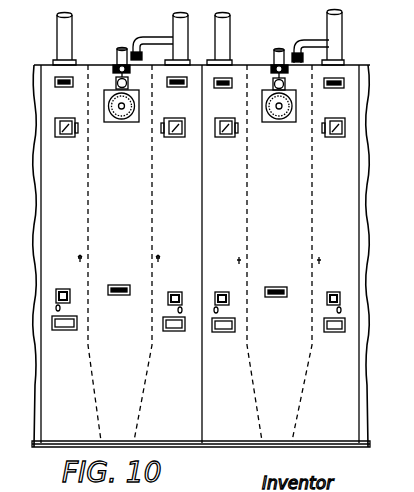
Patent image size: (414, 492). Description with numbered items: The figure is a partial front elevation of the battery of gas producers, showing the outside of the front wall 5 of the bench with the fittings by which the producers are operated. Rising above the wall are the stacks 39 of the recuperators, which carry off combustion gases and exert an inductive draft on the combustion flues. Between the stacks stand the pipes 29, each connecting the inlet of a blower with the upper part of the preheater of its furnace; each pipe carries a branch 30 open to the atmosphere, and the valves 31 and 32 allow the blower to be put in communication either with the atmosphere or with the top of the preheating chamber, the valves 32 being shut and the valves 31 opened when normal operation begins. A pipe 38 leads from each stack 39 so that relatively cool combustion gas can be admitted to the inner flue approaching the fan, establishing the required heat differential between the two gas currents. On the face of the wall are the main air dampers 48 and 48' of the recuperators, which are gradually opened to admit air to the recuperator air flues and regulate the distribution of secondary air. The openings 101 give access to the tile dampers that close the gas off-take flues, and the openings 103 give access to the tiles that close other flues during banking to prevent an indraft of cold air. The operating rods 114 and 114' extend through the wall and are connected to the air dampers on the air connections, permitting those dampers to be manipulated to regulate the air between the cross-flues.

The front wall 5 is at (50, 306).
The pipe 29 is at (115, 83).
The branch 30 is at (118, 56).
The valve 31 is at (115, 85).
The valve 32 is at (130, 70).
The pipe 38 is at (153, 40).
The stack 39 is at (66, 50).
The air damper 48 is at (142, 140).
The air damper 48' is at (253, 140).
The opening 101 is at (125, 280).
The opening 103 is at (60, 320).
The operating rod 114 is at (178, 307).
The operating rod 114' is at (254, 297).